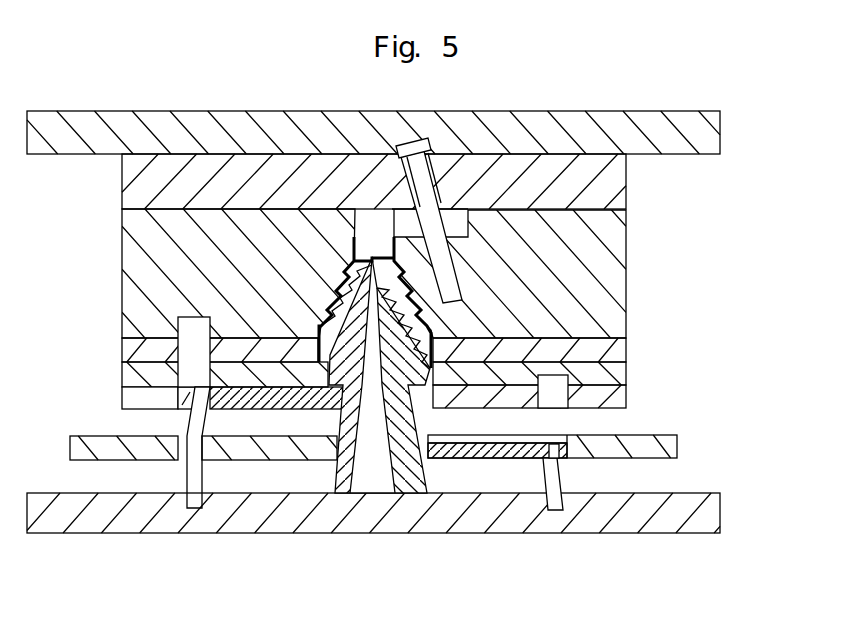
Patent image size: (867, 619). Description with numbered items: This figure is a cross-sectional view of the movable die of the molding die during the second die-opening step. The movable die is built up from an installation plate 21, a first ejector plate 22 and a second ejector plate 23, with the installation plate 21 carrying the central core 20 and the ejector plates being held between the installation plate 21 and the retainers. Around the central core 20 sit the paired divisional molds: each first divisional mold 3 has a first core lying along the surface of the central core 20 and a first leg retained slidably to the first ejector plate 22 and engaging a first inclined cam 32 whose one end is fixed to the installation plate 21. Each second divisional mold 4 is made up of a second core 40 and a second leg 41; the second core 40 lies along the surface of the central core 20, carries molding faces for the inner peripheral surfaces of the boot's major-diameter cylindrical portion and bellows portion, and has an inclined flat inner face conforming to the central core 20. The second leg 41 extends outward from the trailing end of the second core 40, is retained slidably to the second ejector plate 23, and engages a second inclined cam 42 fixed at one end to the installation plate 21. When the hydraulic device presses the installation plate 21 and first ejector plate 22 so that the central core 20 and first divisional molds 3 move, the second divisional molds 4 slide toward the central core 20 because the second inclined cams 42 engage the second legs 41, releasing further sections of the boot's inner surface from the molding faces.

The first divisional mold 3 is at (412, 423).
The second divisional mold 4 is at (354, 392).
The second core 40 is at (376, 400).
The central core 20 is at (337, 373).
The installation plate 21 is at (727, 497).
The first ejector plate 22 is at (665, 440).
The second ejector plate 23 is at (612, 394).
The first inclined cam 32 is at (552, 480).
The second leg 41 is at (258, 400).
The second inclined cam 42 is at (190, 423).